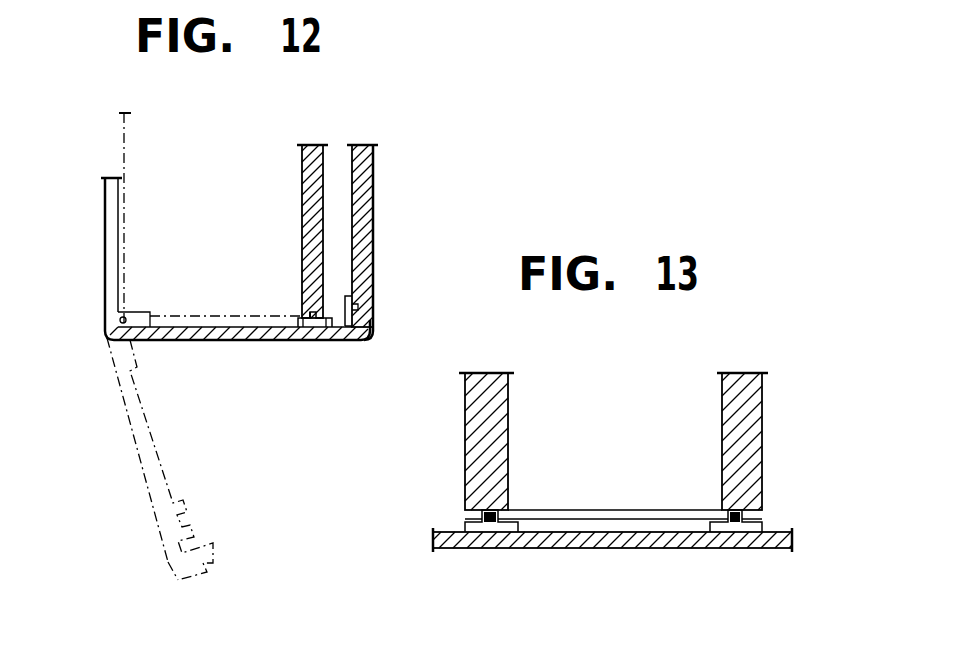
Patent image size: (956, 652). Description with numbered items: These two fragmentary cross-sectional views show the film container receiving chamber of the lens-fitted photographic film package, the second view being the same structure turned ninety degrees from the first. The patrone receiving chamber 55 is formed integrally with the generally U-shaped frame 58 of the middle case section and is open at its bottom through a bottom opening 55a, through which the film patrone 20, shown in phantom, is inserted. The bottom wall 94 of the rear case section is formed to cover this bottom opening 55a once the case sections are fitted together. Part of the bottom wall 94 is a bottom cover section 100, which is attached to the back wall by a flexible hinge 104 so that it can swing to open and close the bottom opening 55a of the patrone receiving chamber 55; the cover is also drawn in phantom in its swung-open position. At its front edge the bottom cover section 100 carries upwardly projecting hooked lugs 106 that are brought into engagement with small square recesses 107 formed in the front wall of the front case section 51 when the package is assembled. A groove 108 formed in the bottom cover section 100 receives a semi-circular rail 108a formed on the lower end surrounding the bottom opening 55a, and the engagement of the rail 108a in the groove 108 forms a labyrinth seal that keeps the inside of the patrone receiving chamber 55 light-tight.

In FIG. 12, the film patrone 20 is at (232, 141).
In FIG. 12, the front case section 51 is at (372, 185).
In FIG. 13, the patrone receiving chamber 55 is at (662, 388).
In FIG. 13, the bottom opening 55a is at (676, 510).
In FIG. 12, the U-shaped frame 58 is at (322, 156).
In FIG. 13, the U-shaped frame 58 is at (475, 455).
In FIG. 13, the bottom wall 94 is at (623, 542).
In FIG. 12, the bottom cover section 100 is at (235, 342).
In FIG. 12, the flexible hinge 104 is at (107, 338).
In FIG. 12, the hooked lugs 106 is at (366, 306).
In FIG. 12, the small square recesses 107 is at (365, 298).
In FIG. 12, the groove 108 is at (315, 341).
In FIG. 13, the groove 108 is at (503, 532).
In FIG. 12, the semi-circular rail 108a is at (318, 310).
In FIG. 13, the semi-circular rail 108a is at (482, 518).